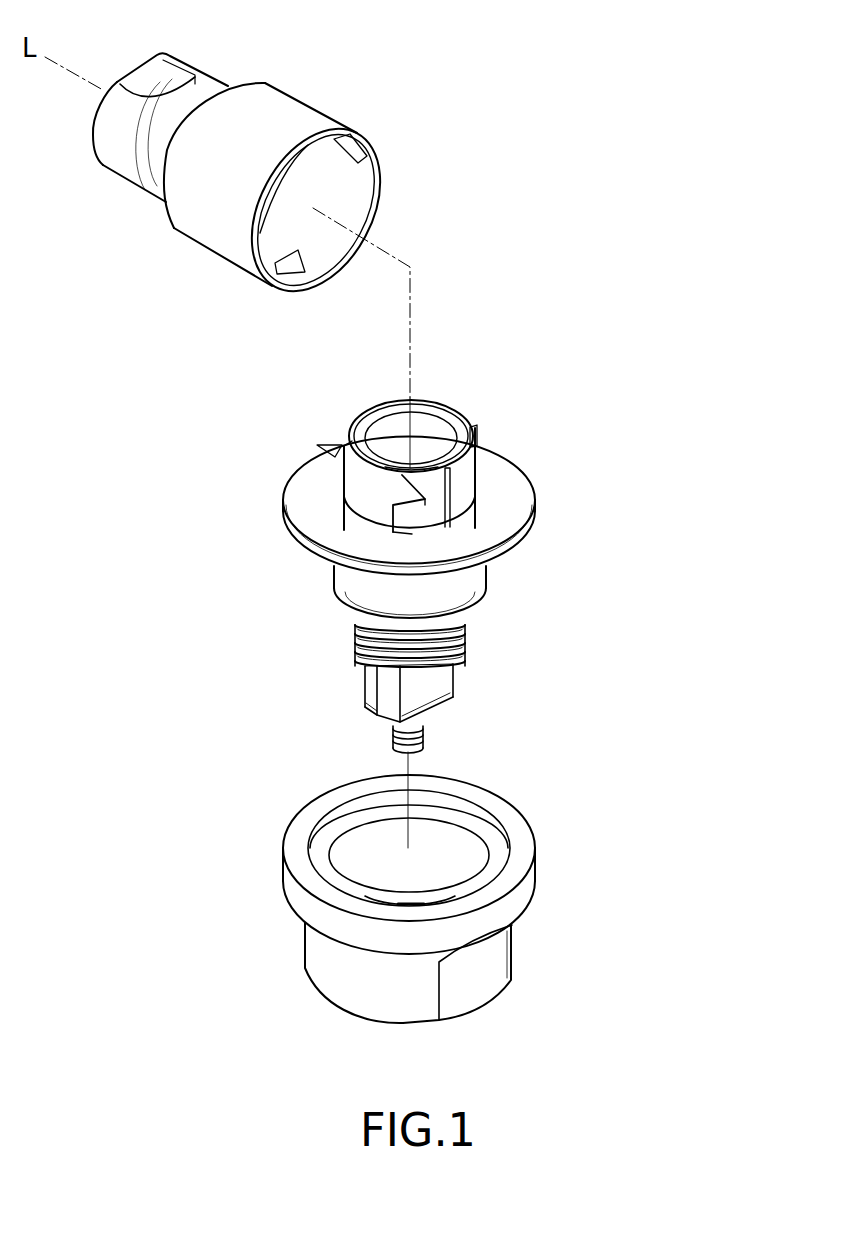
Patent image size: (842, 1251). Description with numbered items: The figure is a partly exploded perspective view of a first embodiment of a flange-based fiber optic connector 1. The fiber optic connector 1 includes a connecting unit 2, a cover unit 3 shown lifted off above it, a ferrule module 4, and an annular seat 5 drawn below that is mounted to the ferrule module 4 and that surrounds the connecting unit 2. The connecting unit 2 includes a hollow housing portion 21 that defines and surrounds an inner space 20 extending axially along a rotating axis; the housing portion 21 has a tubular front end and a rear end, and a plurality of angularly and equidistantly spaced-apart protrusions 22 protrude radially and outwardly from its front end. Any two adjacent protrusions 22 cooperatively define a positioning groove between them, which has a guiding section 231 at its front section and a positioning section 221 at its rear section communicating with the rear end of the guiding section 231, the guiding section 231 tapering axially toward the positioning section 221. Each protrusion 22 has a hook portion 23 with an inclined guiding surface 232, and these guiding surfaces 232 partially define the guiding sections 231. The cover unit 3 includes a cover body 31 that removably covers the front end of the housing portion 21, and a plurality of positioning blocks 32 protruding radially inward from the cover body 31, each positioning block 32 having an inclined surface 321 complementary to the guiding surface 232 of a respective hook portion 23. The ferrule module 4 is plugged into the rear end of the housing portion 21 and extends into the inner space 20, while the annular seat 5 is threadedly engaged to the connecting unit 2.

The fiber optic connector 1 is at (534, 290).
The connecting unit 2 is at (453, 506).
The inner space 20 is at (393, 446).
The housing portion 21 is at (472, 586).
The protrusions 22 is at (355, 505).
The positioning section 221 is at (418, 524).
The hook portion 23 is at (411, 458).
The guiding section 231 is at (450, 479).
The guiding surface 232 is at (404, 474).
The cover unit 3 is at (282, 201).
The cover body 31 is at (292, 114).
The positioning blocks 32 is at (367, 248).
The inclined surface 321 is at (300, 271).
The ferrule module 4 is at (433, 693).
The annular seat 5 is at (314, 953).